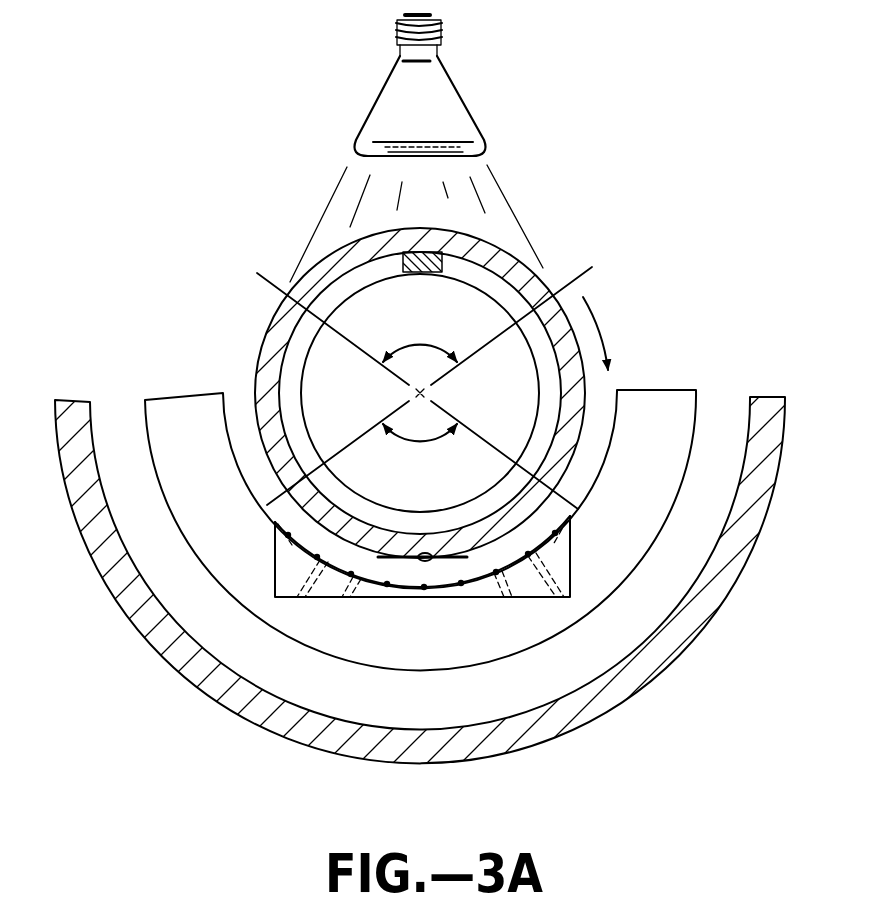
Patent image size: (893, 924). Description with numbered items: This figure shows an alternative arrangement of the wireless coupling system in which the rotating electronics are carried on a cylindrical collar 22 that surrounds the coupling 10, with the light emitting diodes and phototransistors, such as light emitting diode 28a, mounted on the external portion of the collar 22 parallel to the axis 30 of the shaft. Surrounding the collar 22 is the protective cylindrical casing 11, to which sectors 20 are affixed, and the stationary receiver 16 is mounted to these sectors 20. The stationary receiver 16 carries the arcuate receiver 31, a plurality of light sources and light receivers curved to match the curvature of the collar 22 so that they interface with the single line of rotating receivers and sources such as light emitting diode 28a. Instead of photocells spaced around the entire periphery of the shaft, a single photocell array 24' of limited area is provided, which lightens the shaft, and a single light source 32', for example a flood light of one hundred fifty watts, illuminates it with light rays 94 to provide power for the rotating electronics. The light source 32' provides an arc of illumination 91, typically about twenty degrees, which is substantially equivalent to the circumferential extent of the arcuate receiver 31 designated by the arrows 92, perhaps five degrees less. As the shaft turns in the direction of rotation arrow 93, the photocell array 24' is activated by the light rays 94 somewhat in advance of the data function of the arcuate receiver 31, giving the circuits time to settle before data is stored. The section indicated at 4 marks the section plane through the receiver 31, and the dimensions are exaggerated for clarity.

The light source 32' is at (384, 85).
The light rays 94 is at (323, 215).
The collar 22 is at (263, 337).
The coupling 10 is at (428, 334).
The photocell array 24' is at (429, 282).
The axis 30 is at (424, 402).
The arc of illumination 91 is at (393, 350).
The arrows designating circumferential extent of arcuate receiver 92 is at (421, 441).
The direction of rotation arrow 93 is at (605, 340).
The sectors 20 is at (658, 465).
The cylindrical casing 11 is at (128, 614).
The stationary receiver 16 is at (247, 559).
The arcuate receiver 31 is at (375, 631).
The light emitting diode 28a is at (422, 553).
The section line 4- 4 is at (423, 513).